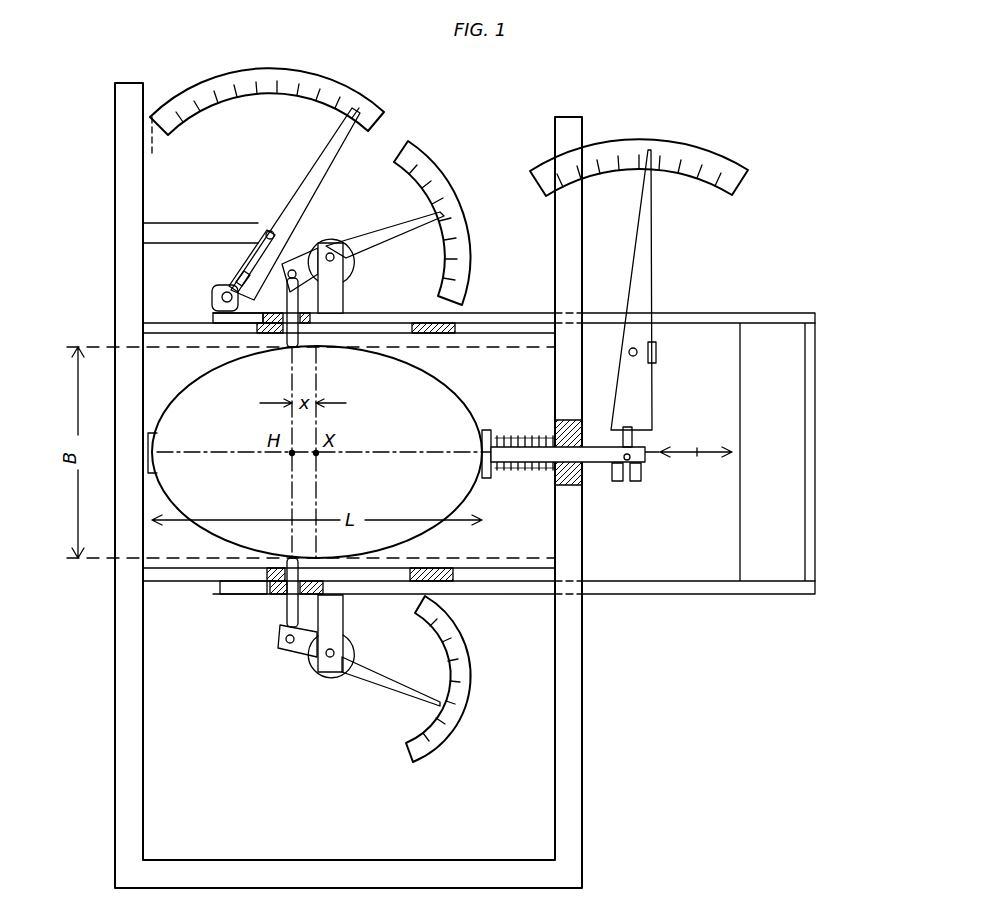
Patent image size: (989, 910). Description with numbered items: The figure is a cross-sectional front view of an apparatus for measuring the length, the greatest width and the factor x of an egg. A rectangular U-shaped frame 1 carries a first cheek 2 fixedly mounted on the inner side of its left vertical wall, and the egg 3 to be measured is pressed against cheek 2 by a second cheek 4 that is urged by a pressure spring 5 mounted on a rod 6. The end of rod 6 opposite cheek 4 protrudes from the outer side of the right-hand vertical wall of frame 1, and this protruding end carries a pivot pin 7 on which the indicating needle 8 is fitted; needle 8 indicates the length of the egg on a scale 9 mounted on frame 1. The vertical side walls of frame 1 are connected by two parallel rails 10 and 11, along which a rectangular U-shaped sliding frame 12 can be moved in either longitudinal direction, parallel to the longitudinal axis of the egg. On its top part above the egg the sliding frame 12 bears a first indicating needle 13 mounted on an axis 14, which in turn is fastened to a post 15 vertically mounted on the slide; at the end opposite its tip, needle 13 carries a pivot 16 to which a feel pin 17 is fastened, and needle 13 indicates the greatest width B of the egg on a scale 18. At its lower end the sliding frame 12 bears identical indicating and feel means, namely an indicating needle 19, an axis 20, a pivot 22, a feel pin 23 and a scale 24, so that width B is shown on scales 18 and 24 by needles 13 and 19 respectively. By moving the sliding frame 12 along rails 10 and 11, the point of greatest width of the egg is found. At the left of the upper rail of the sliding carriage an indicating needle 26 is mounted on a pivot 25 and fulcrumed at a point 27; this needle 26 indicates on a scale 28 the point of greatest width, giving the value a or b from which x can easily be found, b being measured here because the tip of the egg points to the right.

The U-shaped frame 1 is at (294, 868).
The first cheek 2 is at (154, 446).
The egg 3 is at (192, 392).
The second cheek 4 is at (484, 432).
The pressure spring 5 is at (519, 475).
The rod 6 is at (600, 468).
The pivot pin 7 is at (626, 456).
The indicating needle 8 is at (643, 289).
The scale 9 is at (625, 147).
The rail 10 is at (512, 576).
The rail 11 is at (510, 333).
The sliding frame 12 is at (727, 322).
The first indicating needle 13 is at (378, 233).
The axis 14 is at (331, 251).
The post 15 is at (349, 282).
The pivot 16 is at (292, 267).
The feel pin 17 is at (288, 296).
The scale 18 is at (445, 176).
The indicating needle 19 is at (383, 678).
The axis 20 is at (324, 653).
The pivot 22 is at (278, 637).
The feel pin 23 is at (286, 611).
The scale 24 is at (440, 737).
The pivot 25 is at (216, 293).
The indicating needle 26 is at (320, 166).
The fulcrum point 27 is at (272, 230).
The scale 28 is at (220, 80).